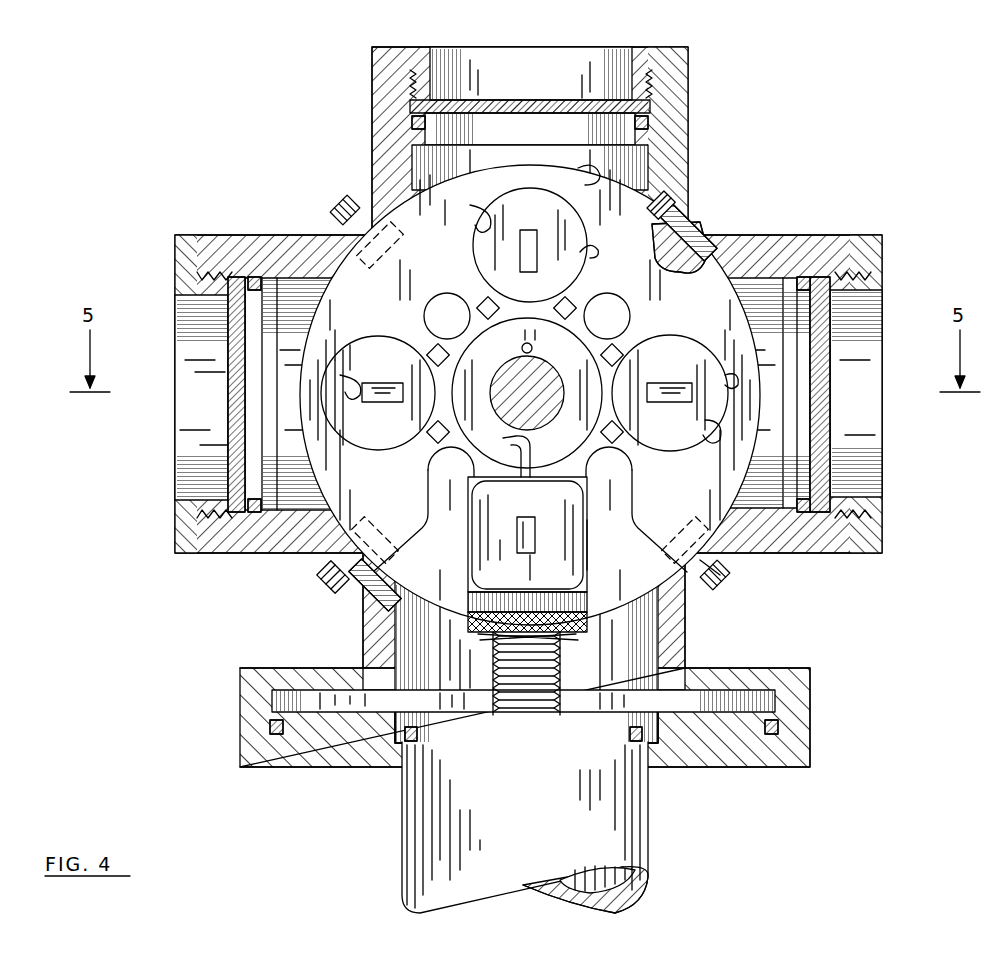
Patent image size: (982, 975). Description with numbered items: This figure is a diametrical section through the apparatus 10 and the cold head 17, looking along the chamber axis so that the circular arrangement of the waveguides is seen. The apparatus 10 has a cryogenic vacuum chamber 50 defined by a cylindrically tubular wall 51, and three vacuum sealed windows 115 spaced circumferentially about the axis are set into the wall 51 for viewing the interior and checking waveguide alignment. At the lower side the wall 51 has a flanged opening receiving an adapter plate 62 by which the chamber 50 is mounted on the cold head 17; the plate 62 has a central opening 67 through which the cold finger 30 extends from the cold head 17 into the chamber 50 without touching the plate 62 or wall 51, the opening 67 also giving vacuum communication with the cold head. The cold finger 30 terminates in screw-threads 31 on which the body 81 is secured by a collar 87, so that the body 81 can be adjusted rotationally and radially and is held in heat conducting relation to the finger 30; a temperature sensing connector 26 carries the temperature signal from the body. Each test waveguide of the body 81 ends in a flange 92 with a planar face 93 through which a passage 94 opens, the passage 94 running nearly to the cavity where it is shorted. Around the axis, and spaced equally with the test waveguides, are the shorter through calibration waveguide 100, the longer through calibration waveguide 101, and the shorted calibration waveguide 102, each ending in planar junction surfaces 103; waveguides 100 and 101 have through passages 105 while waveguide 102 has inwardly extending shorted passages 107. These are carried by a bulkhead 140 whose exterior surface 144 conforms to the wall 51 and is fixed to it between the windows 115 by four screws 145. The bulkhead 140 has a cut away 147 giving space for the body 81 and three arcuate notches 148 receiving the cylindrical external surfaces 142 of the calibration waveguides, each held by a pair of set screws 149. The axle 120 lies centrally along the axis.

The apparatus 10 is at (528, 395).
The cold head 17 is at (655, 820).
The temperature sensing connector 26 is at (518, 447).
The cold finger 30 is at (565, 664).
The screw-threads 31 is at (492, 660).
The cryogenic vacuum chamber 50 is at (445, 578).
The cylindrically tubular wall 51 is at (728, 565).
The adapter plate 62 is at (798, 765).
The central opening 67 is at (455, 725).
The body 81 is at (595, 530).
The collar 87 is at (590, 622).
The flange 92 is at (480, 538).
The planar face 93 is at (527, 544).
The passage 94 is at (515, 538).
The shorter through calibration waveguide 100 is at (600, 236).
The longer through calibration waveguide 101 is at (655, 328).
The shorted calibration waveguide 102 is at (383, 330).
The planar junction surface 103 is at (533, 302).
The passage 105 is at (538, 230).
The passage 107 is at (390, 398).
The window 115 is at (548, 100).
The axle 120 is at (478, 398).
The bulkhead 140 is at (352, 270).
The cylindrical external surface 142 is at (644, 316).
The exterior surface 144 is at (597, 182).
The screw 145 is at (335, 205).
The cut away 147 is at (612, 480).
The arcuate notch 148 is at (478, 205).
The set screw 149 is at (433, 305).